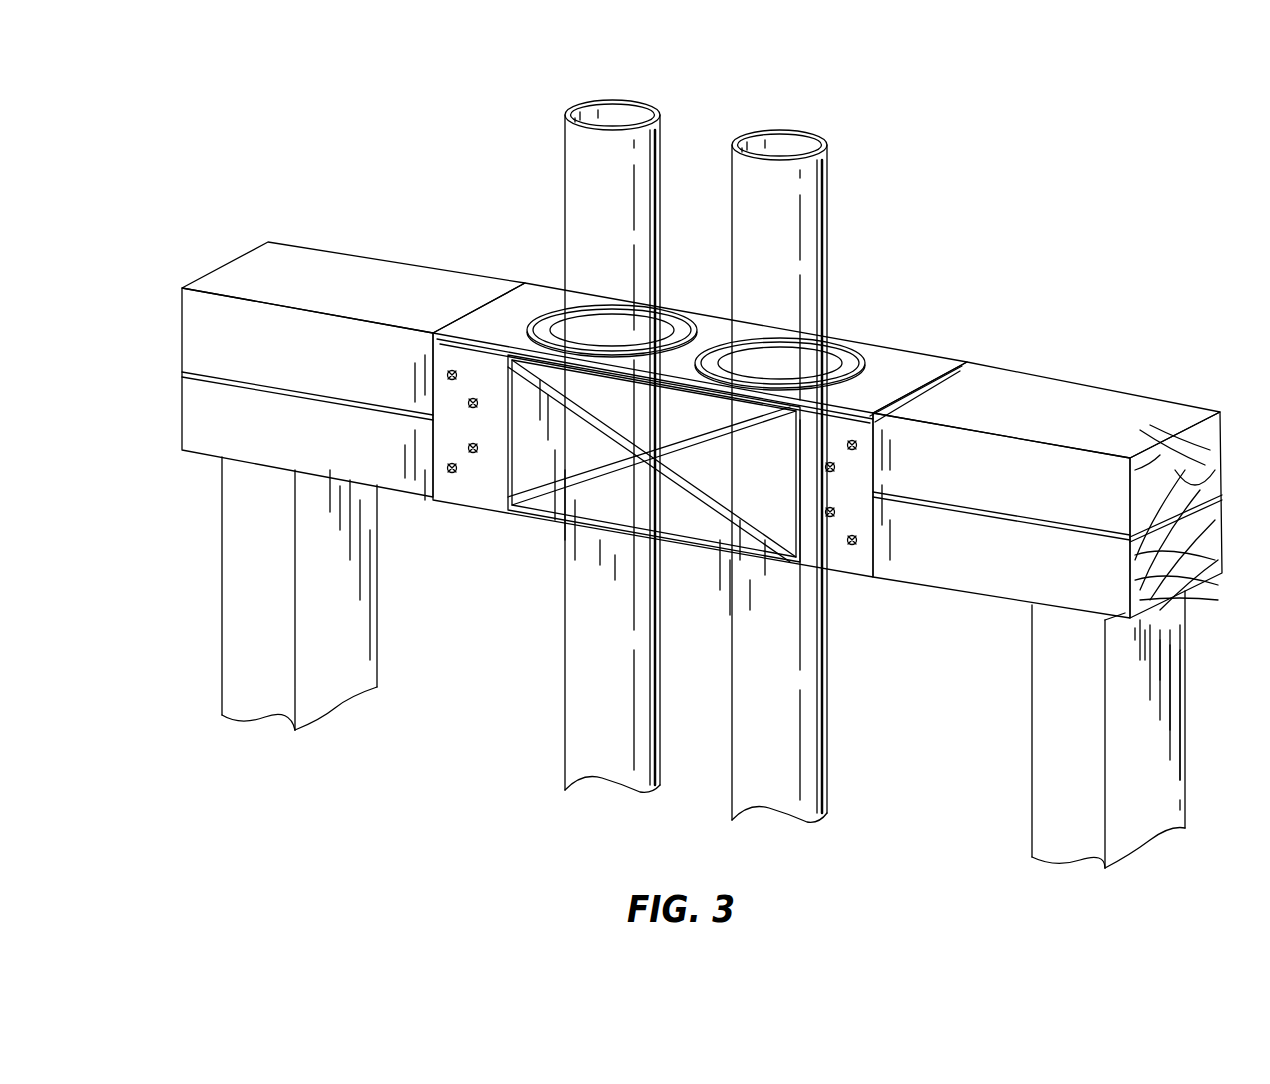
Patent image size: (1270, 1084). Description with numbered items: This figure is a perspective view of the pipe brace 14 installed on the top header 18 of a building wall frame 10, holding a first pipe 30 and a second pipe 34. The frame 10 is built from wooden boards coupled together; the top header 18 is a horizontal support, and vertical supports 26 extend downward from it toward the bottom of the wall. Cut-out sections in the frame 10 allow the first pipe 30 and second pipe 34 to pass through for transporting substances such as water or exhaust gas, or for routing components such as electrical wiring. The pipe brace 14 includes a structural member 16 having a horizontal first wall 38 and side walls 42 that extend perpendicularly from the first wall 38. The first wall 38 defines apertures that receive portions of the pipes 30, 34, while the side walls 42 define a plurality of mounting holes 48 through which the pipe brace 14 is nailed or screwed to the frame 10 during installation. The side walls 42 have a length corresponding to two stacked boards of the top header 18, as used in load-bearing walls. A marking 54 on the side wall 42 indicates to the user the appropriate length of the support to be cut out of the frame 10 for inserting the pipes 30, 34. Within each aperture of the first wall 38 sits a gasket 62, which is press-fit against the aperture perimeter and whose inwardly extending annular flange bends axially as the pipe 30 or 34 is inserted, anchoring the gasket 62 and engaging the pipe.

The frame 10 is at (226, 218).
The pipe brace 14 is at (538, 258).
The structural member 16 is at (475, 303).
The top header 18 is at (1060, 400).
The vertical supports 26 is at (237, 680).
The first pipe 30 is at (566, 113).
The second pipe 34 is at (826, 146).
The first wall 38 is at (905, 355).
The side walls 42 is at (490, 483).
The mounting holes 48 is at (470, 408).
The marking 54 is at (812, 524).
The gasket 62 is at (665, 318).